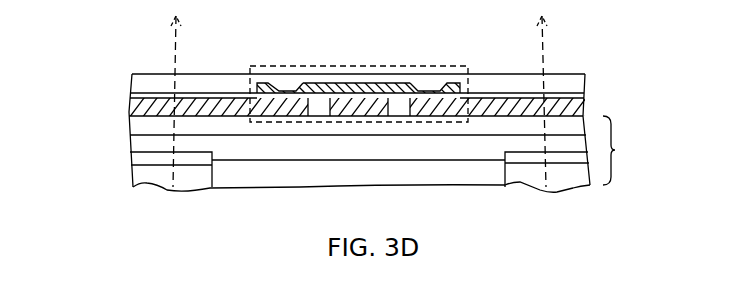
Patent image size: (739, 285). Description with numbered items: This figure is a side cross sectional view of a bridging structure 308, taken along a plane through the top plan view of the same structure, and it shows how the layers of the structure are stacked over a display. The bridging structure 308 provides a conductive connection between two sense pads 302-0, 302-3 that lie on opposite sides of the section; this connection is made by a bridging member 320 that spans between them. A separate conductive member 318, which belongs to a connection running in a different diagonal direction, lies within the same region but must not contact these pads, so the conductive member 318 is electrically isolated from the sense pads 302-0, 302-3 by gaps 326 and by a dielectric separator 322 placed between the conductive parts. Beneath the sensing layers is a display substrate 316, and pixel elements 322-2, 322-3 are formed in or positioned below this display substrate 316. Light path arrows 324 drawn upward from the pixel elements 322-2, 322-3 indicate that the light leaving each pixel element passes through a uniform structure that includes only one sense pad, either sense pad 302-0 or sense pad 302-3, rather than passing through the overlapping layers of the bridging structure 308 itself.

The bridging structure 308 is at (352, 66).
The bridging member 320 is at (388, 96).
The conductive member 318 is at (411, 84).
The dielectric separator 322 is at (305, 83).
The light path arrows 324 is at (173, 52).
The sense pad 302-0 is at (150, 92).
The sense pad 302-3 is at (583, 93).
The display substrate 316 is at (433, 150).
The pixel element 322-2 is at (183, 177).
The pixel element 322-3 is at (540, 187).
The gaps 326 is at (318, 102).